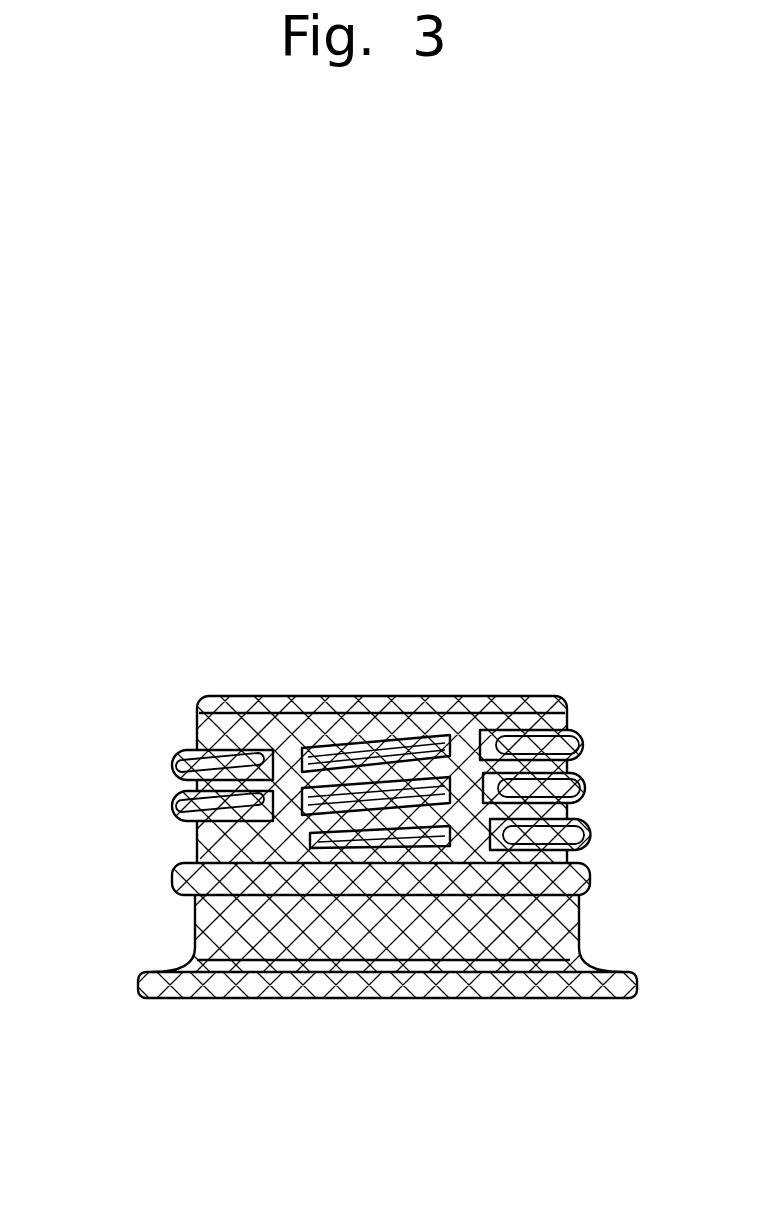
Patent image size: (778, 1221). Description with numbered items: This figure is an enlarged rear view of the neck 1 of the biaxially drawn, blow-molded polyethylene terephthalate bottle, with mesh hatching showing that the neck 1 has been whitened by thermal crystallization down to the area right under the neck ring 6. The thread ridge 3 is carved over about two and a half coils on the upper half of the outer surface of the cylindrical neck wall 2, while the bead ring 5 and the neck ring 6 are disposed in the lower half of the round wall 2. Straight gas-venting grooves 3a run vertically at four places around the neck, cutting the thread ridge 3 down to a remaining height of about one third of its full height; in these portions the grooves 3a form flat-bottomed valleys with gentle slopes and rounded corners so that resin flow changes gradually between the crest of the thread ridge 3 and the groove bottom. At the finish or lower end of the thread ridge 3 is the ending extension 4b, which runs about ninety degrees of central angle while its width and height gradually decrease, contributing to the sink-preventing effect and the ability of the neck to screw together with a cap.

The neck 1 is at (475, 683).
The cylindrical neck wall 2 is at (197, 737).
The thread ridge 3 is at (587, 790).
The gas-venting groove 3a is at (517, 693).
The ending extension 4b is at (407, 843).
The bead ring 5 is at (173, 883).
The neck ring 6 is at (633, 978).